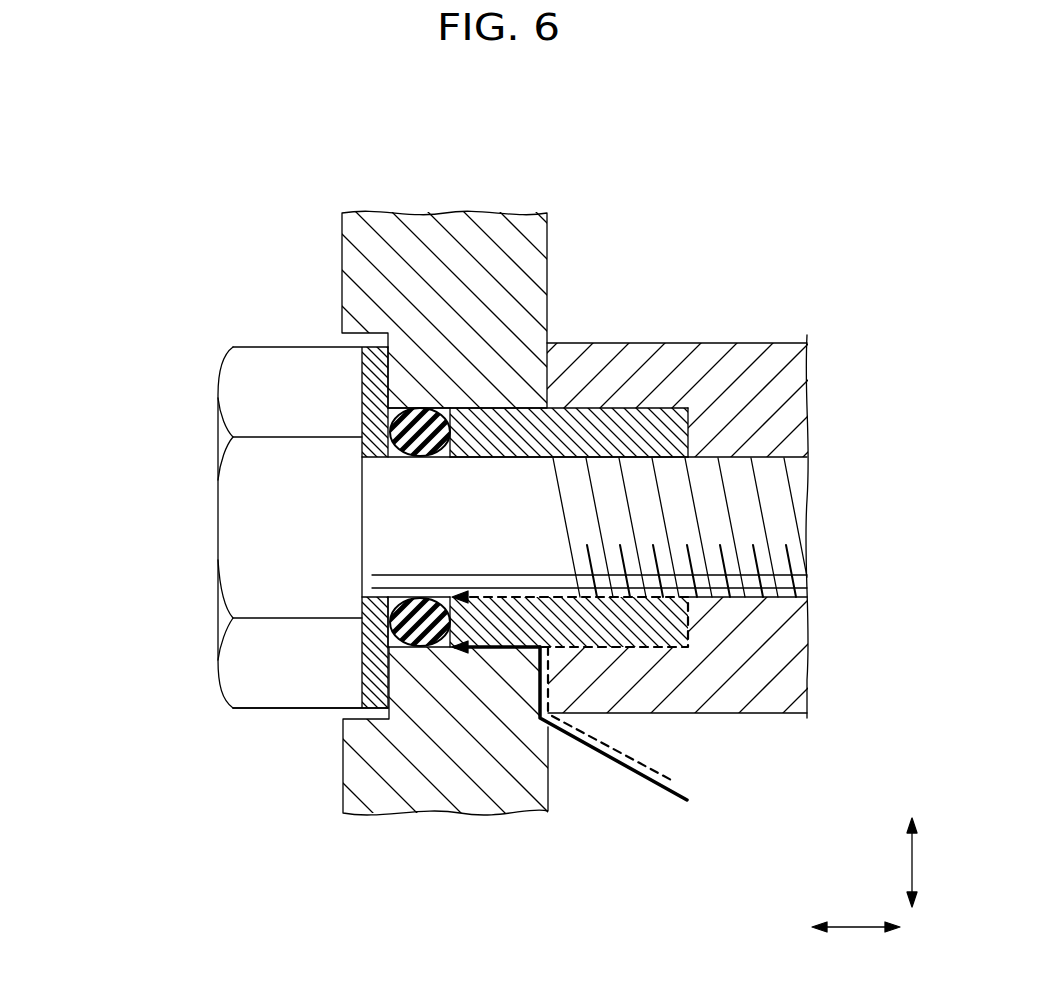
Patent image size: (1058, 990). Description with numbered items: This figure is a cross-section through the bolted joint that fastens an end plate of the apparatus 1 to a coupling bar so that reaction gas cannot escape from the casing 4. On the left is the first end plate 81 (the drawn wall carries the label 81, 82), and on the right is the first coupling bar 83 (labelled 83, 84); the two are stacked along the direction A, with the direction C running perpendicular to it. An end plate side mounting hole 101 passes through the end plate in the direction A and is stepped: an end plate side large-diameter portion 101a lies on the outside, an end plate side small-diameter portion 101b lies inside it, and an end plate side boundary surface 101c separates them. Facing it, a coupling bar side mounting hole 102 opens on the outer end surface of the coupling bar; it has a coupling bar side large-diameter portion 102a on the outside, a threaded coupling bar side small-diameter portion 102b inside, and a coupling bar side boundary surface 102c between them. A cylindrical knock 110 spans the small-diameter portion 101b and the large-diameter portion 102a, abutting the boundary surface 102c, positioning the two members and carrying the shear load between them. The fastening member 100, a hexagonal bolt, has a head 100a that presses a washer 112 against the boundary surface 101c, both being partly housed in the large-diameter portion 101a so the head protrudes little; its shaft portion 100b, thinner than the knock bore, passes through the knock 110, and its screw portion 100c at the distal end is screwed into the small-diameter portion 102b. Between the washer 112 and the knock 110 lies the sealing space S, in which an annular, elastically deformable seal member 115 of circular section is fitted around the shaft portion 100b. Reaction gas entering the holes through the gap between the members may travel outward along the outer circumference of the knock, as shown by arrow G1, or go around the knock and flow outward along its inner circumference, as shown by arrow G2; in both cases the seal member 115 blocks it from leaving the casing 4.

The pipe joint structure 1 is at (500, 494).
The casing 4 is at (187, 272).
The first end plate 81 is at (369, 494).
The second member body wall 82 is at (345, 245).
The first coupling bar 83 is at (748, 502).
The second pipe wall 84 is at (790, 647).
The fastening member 100 is at (227, 357).
The head 100a is at (218, 460).
The shaft portion 100b is at (497, 495).
The screw portion 100c is at (797, 548).
The end plate side mounting hole 101 is at (120, 530).
The end plate side large-diameter portion 101a is at (352, 718).
The end plate side small-diameter portion 101b is at (517, 647).
The end plate side boundary surface 101c is at (387, 668).
The coupling bar side mounting hole 102 is at (787, 173).
The coupling bar side large-diameter portion 102a is at (640, 415).
The coupling bar side small-diameter portion 102b is at (782, 460).
The coupling bar side boundary surface 102c is at (673, 410).
The cylindrical knock 110 is at (667, 637).
The washer 112 is at (373, 383).
The seal member 115 is at (407, 407).
The sealing space S is at (445, 408).
The arrow G1 is at (653, 792).
The arrow G2 is at (660, 765).
The direction A is at (856, 946).
The radial direction C is at (924, 862).